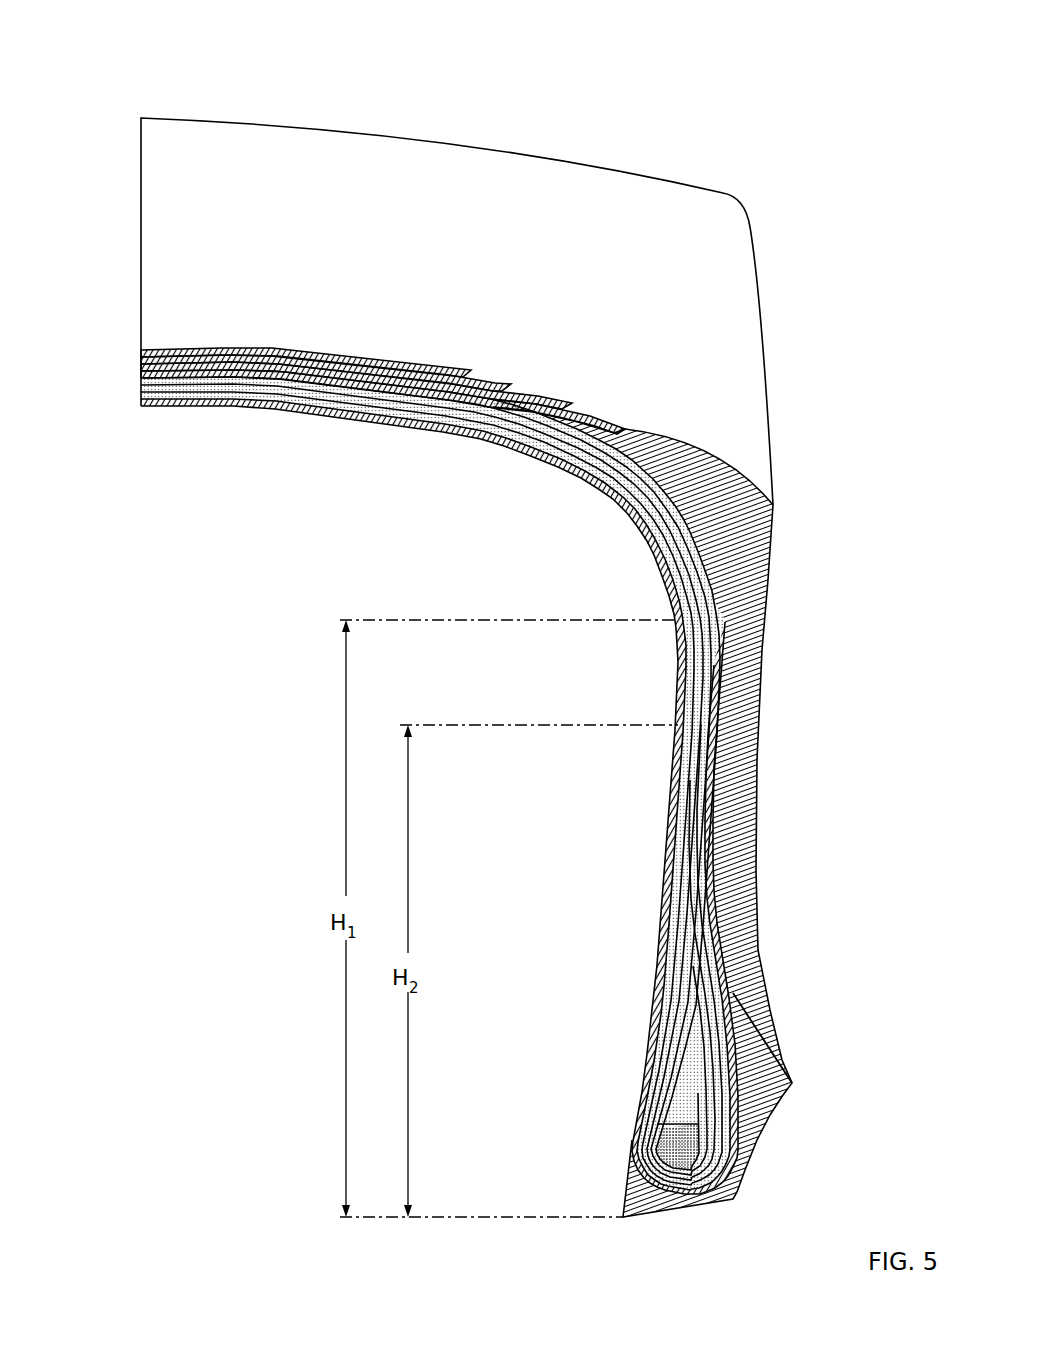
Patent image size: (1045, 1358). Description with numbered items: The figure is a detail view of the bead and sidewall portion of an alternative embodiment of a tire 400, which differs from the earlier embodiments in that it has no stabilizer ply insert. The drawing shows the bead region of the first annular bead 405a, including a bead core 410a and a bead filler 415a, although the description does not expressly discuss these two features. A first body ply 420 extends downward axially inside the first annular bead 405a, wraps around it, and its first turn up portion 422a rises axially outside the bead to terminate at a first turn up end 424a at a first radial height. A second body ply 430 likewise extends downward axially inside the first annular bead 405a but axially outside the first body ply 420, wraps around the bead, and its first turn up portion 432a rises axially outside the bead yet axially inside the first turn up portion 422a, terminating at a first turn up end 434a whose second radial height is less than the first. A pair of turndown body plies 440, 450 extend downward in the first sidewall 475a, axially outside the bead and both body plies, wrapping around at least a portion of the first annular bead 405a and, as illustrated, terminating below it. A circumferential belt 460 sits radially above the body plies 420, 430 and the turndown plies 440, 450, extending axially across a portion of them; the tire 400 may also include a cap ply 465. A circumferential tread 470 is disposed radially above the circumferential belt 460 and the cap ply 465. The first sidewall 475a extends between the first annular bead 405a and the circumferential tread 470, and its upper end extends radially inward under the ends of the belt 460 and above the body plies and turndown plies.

The tire 400 is at (120, 40).
The first annular bead 405a is at (810, 860).
The bead core 410a is at (673, 1153).
The bead filler 415a is at (678, 1063).
The first body ply 420 is at (660, 942).
The first turn up portion of the first body ply 422a is at (730, 667).
The first turn up end of the first body ply 424a is at (727, 622).
The second body ply 430 is at (690, 830).
The first turn up portion of the second body ply 432a is at (700, 785).
The first turn up end of the second body ply 434a is at (705, 722).
The turndown body ply 440 is at (727, 598).
The turndown body ply 450 is at (720, 575).
The circumferential belt 460 is at (568, 400).
The cap ply 465 is at (465, 367).
The circumferential tread 470 is at (407, 152).
The first sidewall 475a is at (760, 543).